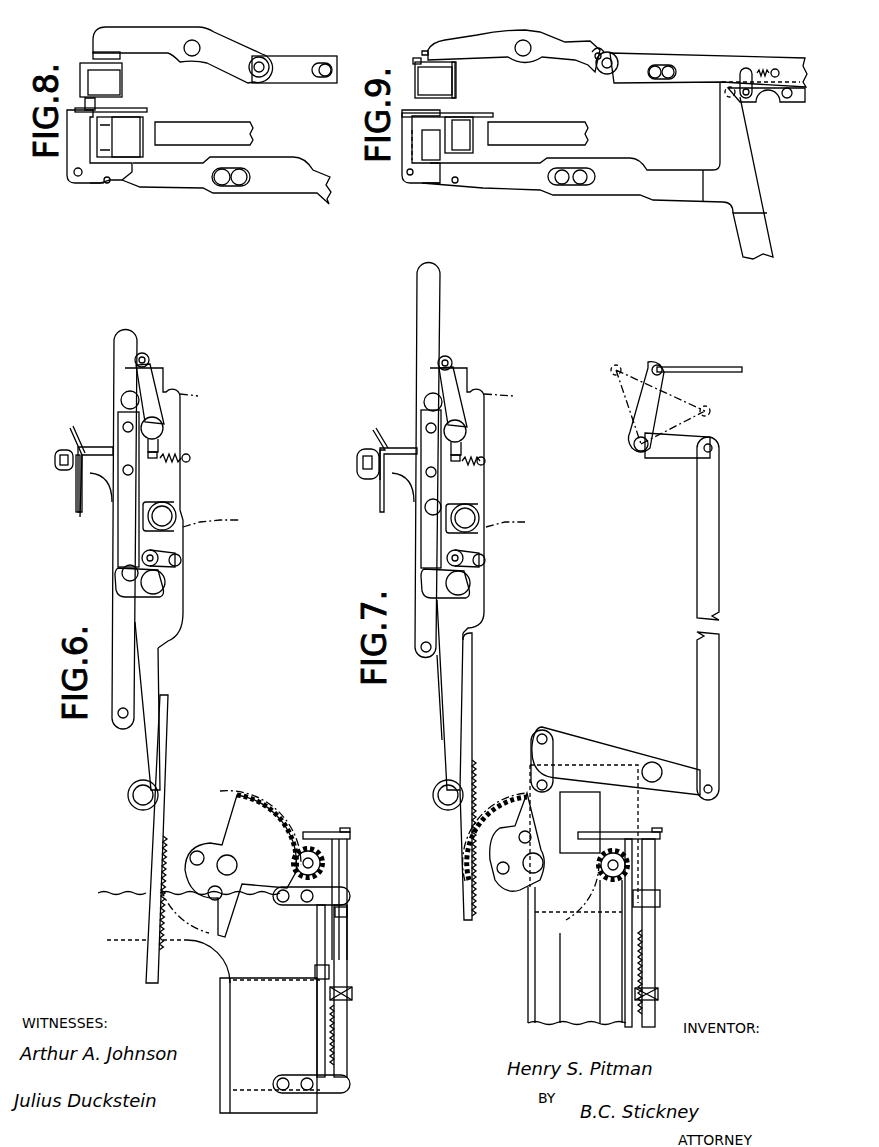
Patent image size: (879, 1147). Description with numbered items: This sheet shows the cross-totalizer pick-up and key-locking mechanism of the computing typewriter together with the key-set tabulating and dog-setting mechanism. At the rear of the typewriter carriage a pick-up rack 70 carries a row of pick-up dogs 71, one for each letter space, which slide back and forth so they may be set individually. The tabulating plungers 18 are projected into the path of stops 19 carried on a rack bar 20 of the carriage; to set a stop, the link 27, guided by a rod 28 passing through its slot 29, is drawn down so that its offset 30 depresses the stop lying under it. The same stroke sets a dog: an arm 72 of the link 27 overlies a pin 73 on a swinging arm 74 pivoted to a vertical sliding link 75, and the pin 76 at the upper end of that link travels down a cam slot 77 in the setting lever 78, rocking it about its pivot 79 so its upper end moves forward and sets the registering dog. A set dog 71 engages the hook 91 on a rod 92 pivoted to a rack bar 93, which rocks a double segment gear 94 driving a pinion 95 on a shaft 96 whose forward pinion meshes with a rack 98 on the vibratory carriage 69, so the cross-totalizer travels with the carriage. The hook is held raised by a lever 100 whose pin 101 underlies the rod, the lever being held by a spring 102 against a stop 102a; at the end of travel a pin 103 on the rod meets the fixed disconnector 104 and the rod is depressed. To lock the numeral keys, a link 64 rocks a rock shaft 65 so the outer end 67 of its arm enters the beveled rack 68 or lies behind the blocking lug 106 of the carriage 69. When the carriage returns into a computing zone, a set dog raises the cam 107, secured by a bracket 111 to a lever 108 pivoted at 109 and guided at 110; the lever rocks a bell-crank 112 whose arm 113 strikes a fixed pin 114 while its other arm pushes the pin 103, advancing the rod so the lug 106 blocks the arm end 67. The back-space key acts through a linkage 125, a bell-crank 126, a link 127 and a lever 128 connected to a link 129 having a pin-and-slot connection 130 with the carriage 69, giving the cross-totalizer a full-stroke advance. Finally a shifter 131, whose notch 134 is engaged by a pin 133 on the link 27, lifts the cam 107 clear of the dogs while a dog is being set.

In FIG. 8, the plungers 18 is at (218, 122).
In FIG. 9, the stops 19 is at (458, 135).
In FIG. 8, the rack bar 20 is at (120, 137).
In FIG. 8, the link 27 is at (310, 198).
In FIG. 9, the link 27 is at (658, 201).
In FIG. 8, the rod 28 is at (240, 186).
In FIG. 9, the rod 28 is at (562, 185).
In FIG. 9, the slot 29 is at (582, 185).
In FIG. 9, the offset 30 is at (427, 145).
In FIG. 6, the link 64 is at (327, 832).
In FIG. 7, the link 64 is at (620, 832).
In FIG. 6, the rock shaft 65 is at (349, 838).
In FIG. 6, the outer end 67 is at (352, 996).
In FIG. 7, the outer end 67 is at (658, 994).
In FIG. 7, the rack 68 is at (655, 945).
In FIG. 6, the vibratory carriage 69 is at (222, 1045).
In FIG. 7, the vibratory carriage 69 is at (528, 985).
In FIG. 8, the pick-up rack 70 is at (101, 80).
In FIG. 9, the pick-up rack 70 is at (434, 78).
In FIG. 8, the pick-up dogs 71 is at (122, 58).
In FIG. 9, the pick-up dogs 71 is at (457, 64).
In FIG. 6, the pick-up dogs 71 is at (95, 447).
In FIG. 7, the pick-up dogs 71 is at (392, 455).
In FIG. 9, the arm 72 is at (744, 131).
In FIG. 9, the pin 73 is at (749, 97).
In FIG. 9, the swinging arm 74 is at (780, 100).
In FIG. 8, the vertical sliding link 75 is at (288, 56).
In FIG. 9, the vertical sliding link 75 is at (710, 56).
In FIG. 8, the pin 76 is at (258, 57).
In FIG. 9, the pin 76 is at (611, 74).
In FIG. 9, the cam slot 77 is at (597, 52).
In FIG. 8, the setting lever 78 is at (140, 28).
In FIG. 9, the setting lever 78 is at (468, 37).
In FIG. 9, the pivot 79 is at (523, 40).
In FIG. 6, the hook 91 is at (112, 503).
In FIG. 7, the hook 91 is at (418, 450).
In FIG. 6, the rod 92 is at (123, 530).
In FIG. 7, the rod 92 is at (426, 460).
In FIG. 6, the rack bar 93 is at (167, 745).
In FIG. 7, the rack bar 93 is at (472, 722).
In FIG. 6, the double segment gear 94 is at (185, 842).
In FIG. 7, the double segment gear 94 is at (515, 885).
In FIG. 6, the pinion 95 is at (292, 840).
In FIG. 7, the pinion 95 is at (597, 852).
In FIG. 6, the shaft 96 is at (294, 863).
In FIG. 7, the shaft 96 is at (613, 865).
In FIG. 6, the rack 98 is at (316, 968).
In FIG. 7, the rack 98 is at (650, 892).
In FIG. 6, the lever 100 is at (155, 395).
In FIG. 7, the lever 100 is at (462, 392).
In FIG. 6, the pin 101 is at (149, 358).
In FIG. 7, the pin 101 is at (445, 363).
In FIG. 6, the spring 102 is at (186, 454).
In FIG. 6, the stop 102a is at (122, 395).
In FIG. 6, the pin 103 is at (122, 572).
In FIG. 7, the pin 103 is at (425, 508).
In FIG. 6, the fixed disconnector 104 is at (141, 490).
In FIG. 6, the blocking lug 106 is at (318, 996).
In FIG. 7, the blocking lug 106 is at (625, 923).
In FIG. 8, the cam 107 is at (88, 100).
In FIG. 6, the cam 107 is at (76, 428).
In FIG. 7, the cam 107 is at (375, 432).
In FIG. 6, the lever 108 is at (159, 652).
In FIG. 7, the lever 108 is at (449, 695).
In FIG. 6, the pivot 109 is at (133, 790).
In FIG. 7, the pivot 109 is at (438, 790).
In FIG. 6, the guide 110 is at (176, 513).
In FIG. 7, the guide 110 is at (462, 518).
In FIG. 8, the bracket 111 is at (135, 110).
In FIG. 9, the bracket 111 is at (486, 113).
In FIG. 6, the bracket 111 is at (82, 467).
In FIG. 6, the bell-crank 112 is at (150, 598).
In FIG. 7, the bell-crank 112 is at (457, 598).
In FIG. 7, the arm 113 is at (484, 562).
In FIG. 6, the fixed pin 114 is at (180, 562).
In FIG. 7, the linkage 125 is at (703, 367).
In FIG. 7, the bell-crank 126 is at (672, 409).
In FIG. 7, the link 127 is at (720, 622).
In FIG. 7, the lever 128 is at (607, 745).
In FIG. 7, the link 129 is at (532, 742).
In FIG. 7, the pin-and-slot connection 130 is at (537, 785).
In FIG. 8, the shifter 131 is at (76, 184).
In FIG. 9, the shifter 131 is at (415, 146).
In FIG. 6, the shifter 131 is at (60, 450).
In FIG. 8, the pin 133 is at (110, 182).
In FIG. 9, the pin 133 is at (458, 183).
In FIG. 8, the notch 134 is at (100, 184).
In FIG. 9, the notch 134 is at (438, 184).